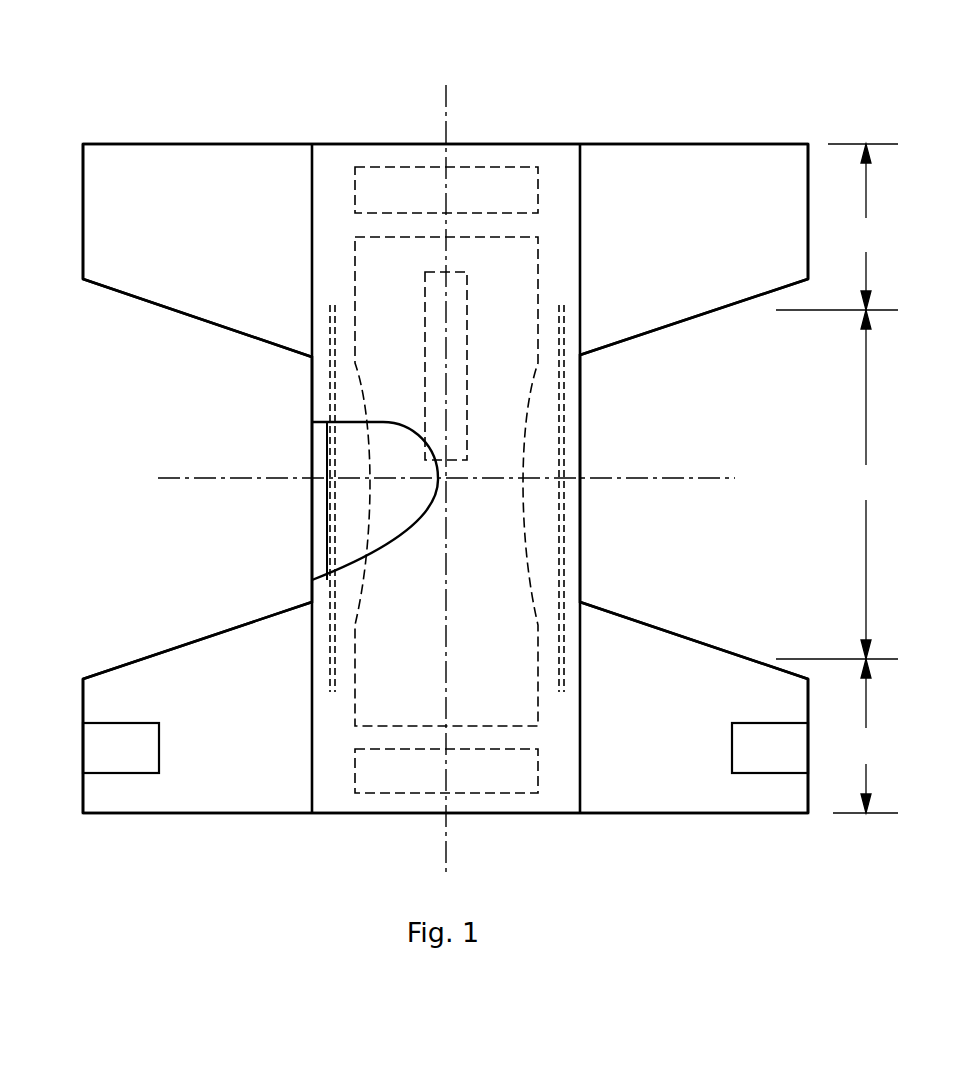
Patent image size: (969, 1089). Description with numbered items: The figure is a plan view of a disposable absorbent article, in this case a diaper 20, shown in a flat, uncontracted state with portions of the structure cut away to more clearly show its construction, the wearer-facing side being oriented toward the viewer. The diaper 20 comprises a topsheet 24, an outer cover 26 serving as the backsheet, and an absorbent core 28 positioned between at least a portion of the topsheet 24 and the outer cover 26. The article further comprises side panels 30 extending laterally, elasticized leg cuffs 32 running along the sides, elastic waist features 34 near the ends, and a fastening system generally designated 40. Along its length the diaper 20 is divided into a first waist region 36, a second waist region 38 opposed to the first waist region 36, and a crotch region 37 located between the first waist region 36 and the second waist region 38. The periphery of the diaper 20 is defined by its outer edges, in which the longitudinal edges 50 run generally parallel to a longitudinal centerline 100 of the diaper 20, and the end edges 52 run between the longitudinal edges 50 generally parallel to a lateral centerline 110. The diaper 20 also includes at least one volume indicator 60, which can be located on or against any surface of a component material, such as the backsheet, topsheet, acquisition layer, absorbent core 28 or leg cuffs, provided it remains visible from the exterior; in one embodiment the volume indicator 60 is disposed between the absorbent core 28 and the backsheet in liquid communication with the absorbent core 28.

The diaper 20 is at (290, 106).
The topsheet 24 is at (515, 385).
The outer cover 26 is at (345, 463).
The absorbent core 28 is at (383, 517).
The side panels 30 is at (187, 295).
The elasticized leg cuffs 32 is at (330, 497).
The elastic waist features 34 is at (395, 195).
The first waist region 36 is at (837, 227).
The crotch region 37 is at (837, 484).
The second waist region 38 is at (865, 736).
The fastening system 40 is at (143, 762).
The longitudinal edges 50 is at (83, 248).
The end edges 52 is at (187, 145).
The volume indicator 60 is at (465, 282).
The longitudinal centerline 100 is at (446, 128).
The lateral centerline 110 is at (205, 479).